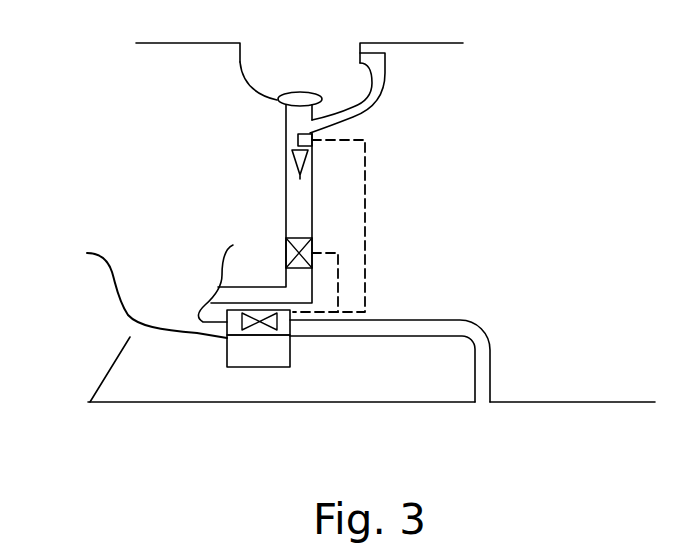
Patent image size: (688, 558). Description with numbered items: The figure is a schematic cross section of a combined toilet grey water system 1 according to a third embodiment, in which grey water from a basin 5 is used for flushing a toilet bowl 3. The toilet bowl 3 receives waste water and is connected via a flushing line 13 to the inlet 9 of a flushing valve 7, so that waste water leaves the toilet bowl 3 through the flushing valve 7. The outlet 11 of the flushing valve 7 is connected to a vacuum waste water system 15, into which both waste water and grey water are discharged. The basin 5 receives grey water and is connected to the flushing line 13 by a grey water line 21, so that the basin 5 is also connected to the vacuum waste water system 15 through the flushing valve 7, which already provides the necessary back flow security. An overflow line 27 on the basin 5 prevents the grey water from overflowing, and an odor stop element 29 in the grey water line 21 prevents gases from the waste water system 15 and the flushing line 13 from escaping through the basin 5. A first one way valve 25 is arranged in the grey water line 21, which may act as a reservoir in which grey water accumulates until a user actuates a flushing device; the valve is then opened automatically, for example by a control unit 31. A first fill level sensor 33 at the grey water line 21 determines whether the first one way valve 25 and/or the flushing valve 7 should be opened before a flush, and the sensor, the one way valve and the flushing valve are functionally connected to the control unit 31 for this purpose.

The combined toilet grey water system 1 is at (567, 75).
The toilet bowl 3 is at (108, 278).
The basin 5 is at (240, 62).
The flushing valve 7 is at (270, 320).
The inlet 9 is at (228, 328).
The outlet 11 is at (287, 323).
The flushing line 13 is at (182, 330).
The vacuum waste water system 15 is at (572, 438).
The grey water line 21 is at (286, 190).
The first one way valve 25 is at (312, 238).
The overflow line 27 is at (387, 77).
The odor stop element 29 is at (305, 158).
The control unit 31 is at (255, 370).
The first fill level sensor 33 is at (298, 140).